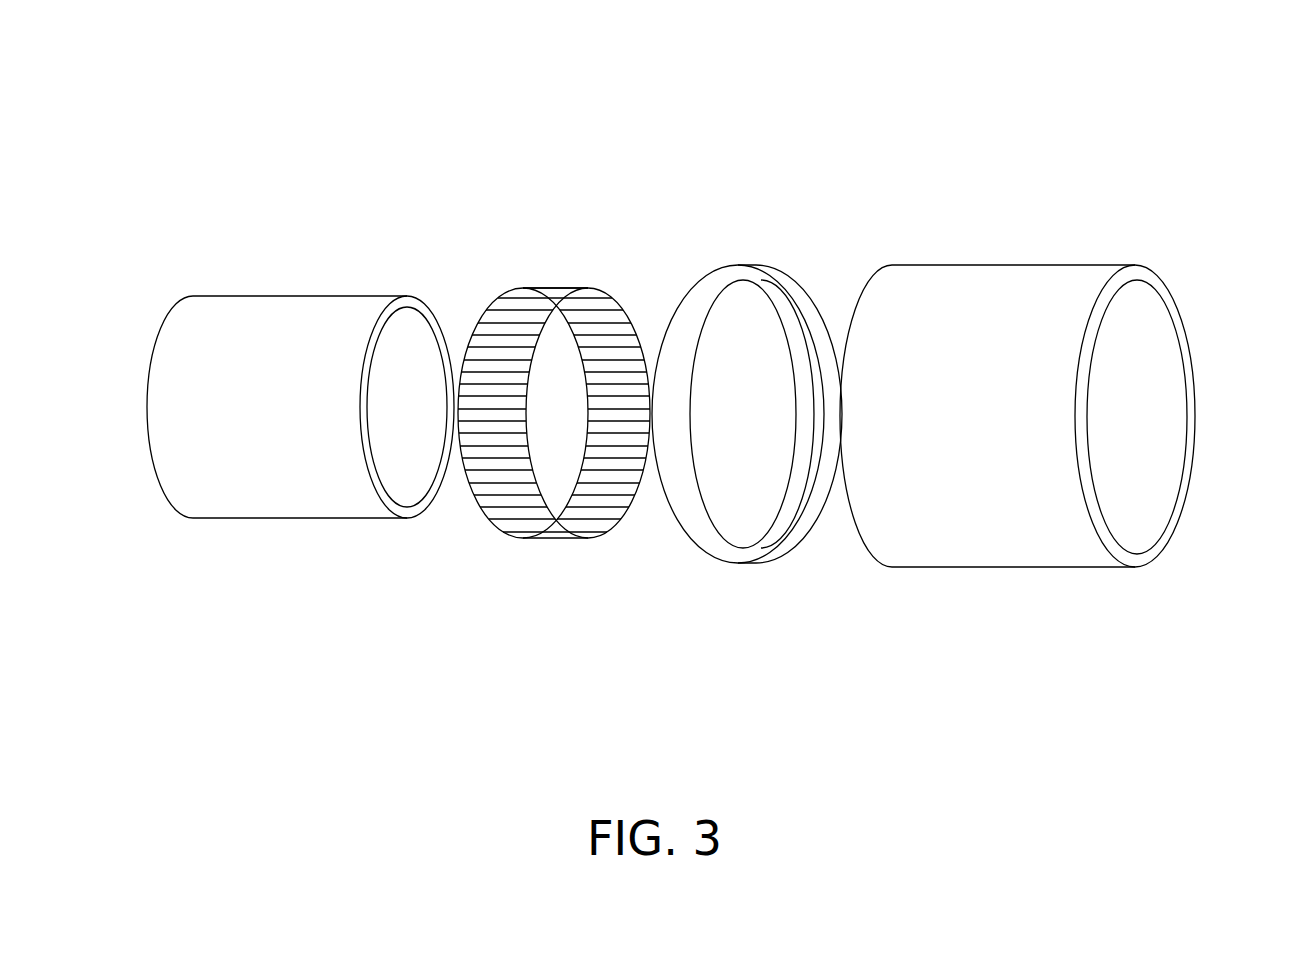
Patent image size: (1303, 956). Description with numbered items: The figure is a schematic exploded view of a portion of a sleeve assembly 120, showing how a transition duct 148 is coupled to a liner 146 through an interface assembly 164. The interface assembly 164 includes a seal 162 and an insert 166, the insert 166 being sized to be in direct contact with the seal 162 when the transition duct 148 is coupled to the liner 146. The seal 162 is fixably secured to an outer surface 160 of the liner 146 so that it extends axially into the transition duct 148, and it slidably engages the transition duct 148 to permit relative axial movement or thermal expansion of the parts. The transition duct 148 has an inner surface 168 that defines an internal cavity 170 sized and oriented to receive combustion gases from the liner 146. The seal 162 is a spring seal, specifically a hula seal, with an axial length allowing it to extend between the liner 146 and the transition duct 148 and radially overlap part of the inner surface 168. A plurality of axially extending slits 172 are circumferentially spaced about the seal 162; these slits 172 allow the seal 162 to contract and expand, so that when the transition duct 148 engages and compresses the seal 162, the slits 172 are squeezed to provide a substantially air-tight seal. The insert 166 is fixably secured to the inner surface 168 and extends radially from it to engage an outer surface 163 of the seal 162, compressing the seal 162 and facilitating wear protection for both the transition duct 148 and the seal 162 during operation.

The sleeve assembly 120 is at (1080, 115).
The liner 146 is at (300, 407).
The transition duct 148 is at (1049, 461).
The outer surface 160 is at (369, 506).
The seal 162 is at (526, 433).
The outer surface 163 is at (538, 290).
The interface assembly 164 is at (774, 241).
The insert 166 is at (713, 538).
The inner surface 168 is at (1141, 465).
The internal cavity 170 is at (1142, 327).
The slits 172 is at (618, 378).